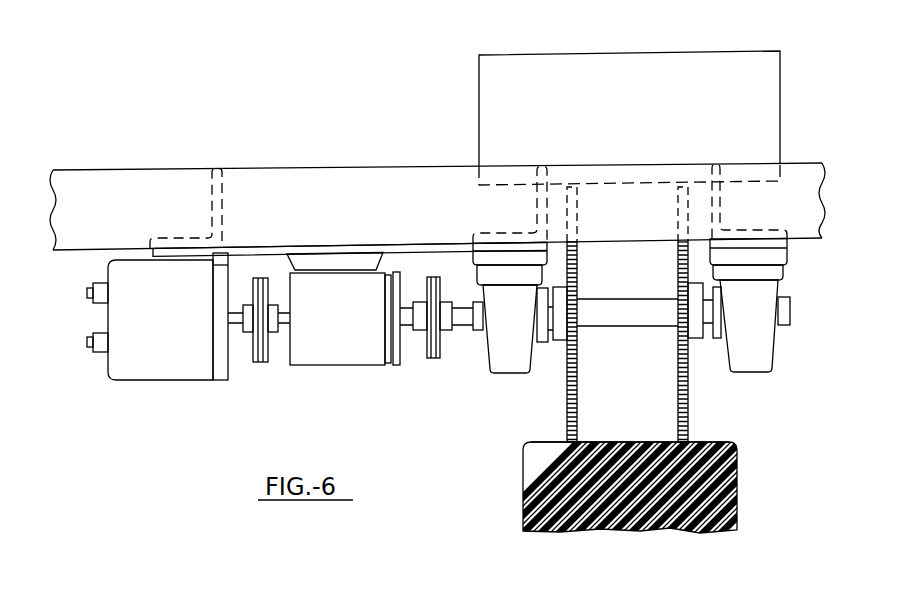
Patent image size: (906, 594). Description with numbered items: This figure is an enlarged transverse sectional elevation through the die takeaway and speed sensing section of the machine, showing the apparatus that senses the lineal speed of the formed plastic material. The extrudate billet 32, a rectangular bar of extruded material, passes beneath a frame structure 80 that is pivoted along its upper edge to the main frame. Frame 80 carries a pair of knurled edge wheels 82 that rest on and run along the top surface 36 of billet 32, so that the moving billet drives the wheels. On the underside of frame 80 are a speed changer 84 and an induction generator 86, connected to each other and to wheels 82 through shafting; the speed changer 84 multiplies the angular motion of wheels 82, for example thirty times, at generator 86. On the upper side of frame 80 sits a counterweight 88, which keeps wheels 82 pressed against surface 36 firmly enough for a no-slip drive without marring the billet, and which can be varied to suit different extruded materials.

The extrudate billet 32 is at (736, 473).
The top surface 36 is at (712, 442).
The frame structure 80 is at (224, 212).
The knurled edge wheels 82 is at (567, 405).
The speed changer 84 is at (333, 350).
The induction generator 86 is at (168, 367).
The counterweight 88 is at (655, 66).